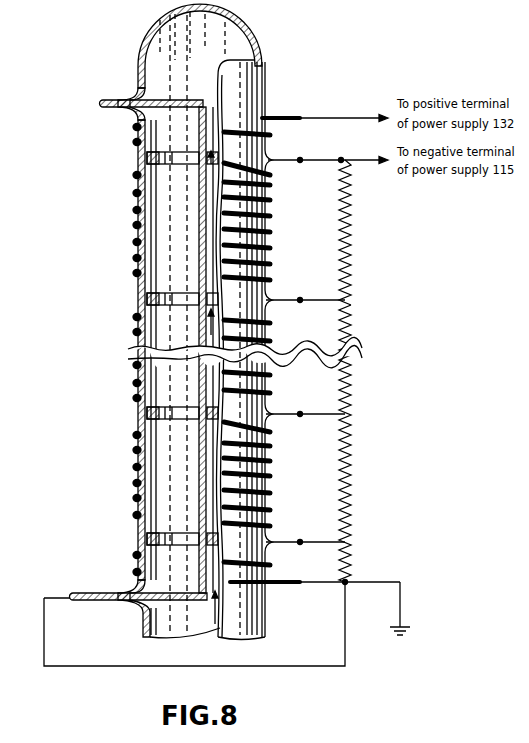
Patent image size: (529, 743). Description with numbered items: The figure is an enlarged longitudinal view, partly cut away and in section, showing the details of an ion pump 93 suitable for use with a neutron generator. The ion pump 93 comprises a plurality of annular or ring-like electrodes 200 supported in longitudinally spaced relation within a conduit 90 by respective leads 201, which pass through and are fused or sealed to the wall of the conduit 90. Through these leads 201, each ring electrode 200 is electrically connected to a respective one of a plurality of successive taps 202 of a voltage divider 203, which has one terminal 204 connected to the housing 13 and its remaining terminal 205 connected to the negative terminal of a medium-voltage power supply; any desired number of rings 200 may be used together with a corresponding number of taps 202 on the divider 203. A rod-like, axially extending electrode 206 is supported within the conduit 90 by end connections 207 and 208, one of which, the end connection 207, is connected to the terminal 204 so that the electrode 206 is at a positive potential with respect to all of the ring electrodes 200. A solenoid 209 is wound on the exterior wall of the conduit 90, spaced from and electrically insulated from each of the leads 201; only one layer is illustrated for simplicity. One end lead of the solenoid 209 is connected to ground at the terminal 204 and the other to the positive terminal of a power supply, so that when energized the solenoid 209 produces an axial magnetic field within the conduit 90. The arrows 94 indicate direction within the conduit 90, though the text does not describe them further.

The housing 13 is at (402, 598).
The conduit 90 is at (268, 600).
The ion pump 93 is at (128, 294).
The flow direction arrows 94 is at (205, 323).
The annular electrodes 200 is at (172, 166).
The leads 201 is at (293, 166).
The taps 202 is at (342, 299).
The voltage divider 203 is at (349, 320).
The terminal 204 is at (347, 584).
The terminal 205 is at (340, 159).
The rod-like electrode 206 is at (200, 397).
The end connection 207 is at (98, 576).
The end connection 208 is at (120, 100).
The solenoid 209 is at (131, 178).